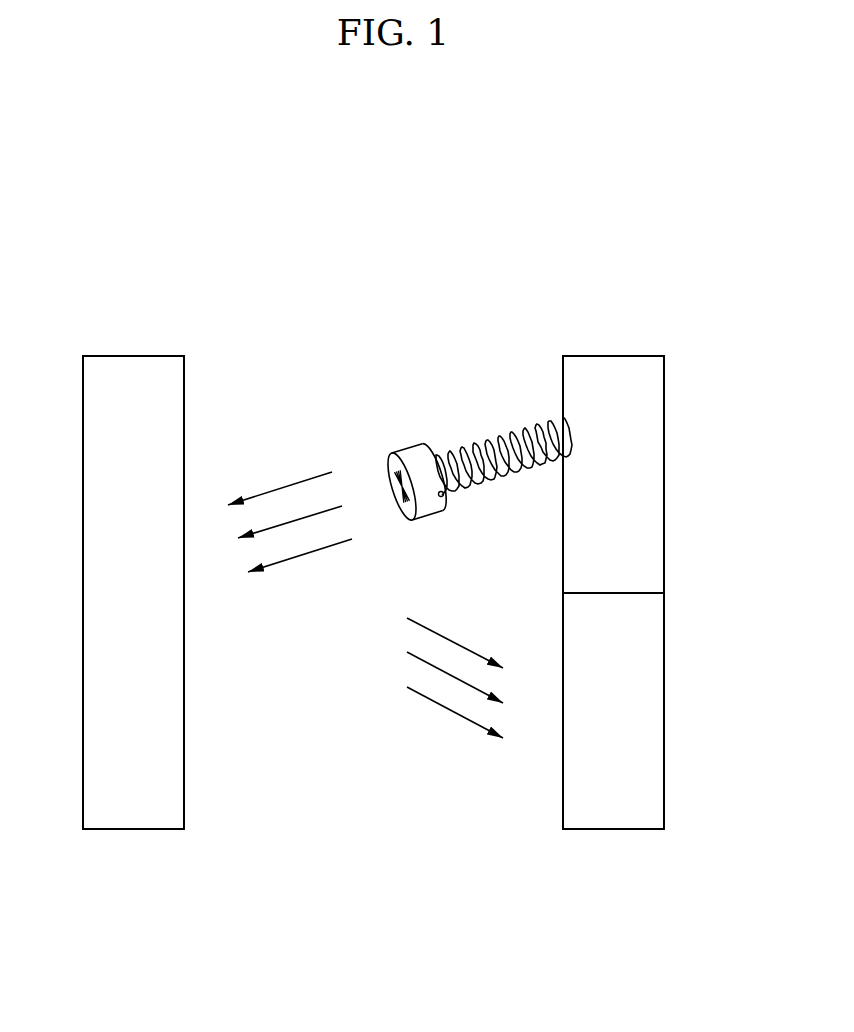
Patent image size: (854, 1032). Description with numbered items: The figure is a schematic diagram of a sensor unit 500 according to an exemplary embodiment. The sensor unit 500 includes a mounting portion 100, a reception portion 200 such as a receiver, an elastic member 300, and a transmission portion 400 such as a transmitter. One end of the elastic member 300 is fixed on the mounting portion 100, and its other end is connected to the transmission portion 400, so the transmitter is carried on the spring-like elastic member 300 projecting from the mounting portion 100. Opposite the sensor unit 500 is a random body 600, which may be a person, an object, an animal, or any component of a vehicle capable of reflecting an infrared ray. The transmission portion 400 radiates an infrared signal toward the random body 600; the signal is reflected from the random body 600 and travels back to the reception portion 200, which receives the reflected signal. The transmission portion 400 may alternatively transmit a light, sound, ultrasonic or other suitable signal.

The mounting portion 100 is at (642, 492).
The reception portion 200 is at (642, 692).
The elastic member 300 is at (507, 432).
The transmission portion 400 is at (408, 456).
The sensor unit 500 is at (546, 510).
The random body 600 is at (131, 377).